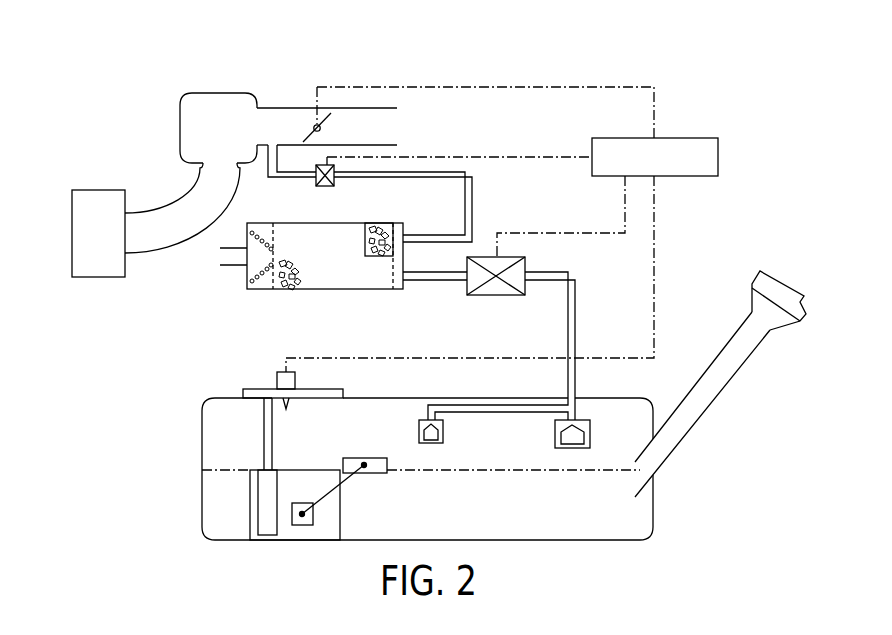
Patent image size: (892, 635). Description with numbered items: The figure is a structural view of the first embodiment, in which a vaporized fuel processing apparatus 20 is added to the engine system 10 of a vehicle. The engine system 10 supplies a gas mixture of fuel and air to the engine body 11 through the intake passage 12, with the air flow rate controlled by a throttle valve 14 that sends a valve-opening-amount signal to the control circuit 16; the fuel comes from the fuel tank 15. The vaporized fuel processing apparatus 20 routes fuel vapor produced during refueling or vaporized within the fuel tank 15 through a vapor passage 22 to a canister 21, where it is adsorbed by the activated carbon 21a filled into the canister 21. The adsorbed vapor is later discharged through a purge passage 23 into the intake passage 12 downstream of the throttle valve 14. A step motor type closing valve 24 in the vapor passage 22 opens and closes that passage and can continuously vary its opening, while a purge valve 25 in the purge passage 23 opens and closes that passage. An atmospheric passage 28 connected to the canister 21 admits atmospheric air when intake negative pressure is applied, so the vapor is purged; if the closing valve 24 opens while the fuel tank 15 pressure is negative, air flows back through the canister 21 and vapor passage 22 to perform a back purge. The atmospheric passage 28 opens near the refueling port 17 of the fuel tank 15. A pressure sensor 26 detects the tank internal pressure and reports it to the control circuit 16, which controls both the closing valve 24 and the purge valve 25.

The engine system 10 is at (100, 78).
The engine body 11 is at (95, 203).
The intake passage 12 is at (270, 107).
The throttle valve 14 is at (327, 107).
The fuel tank 15 is at (198, 440).
The control circuit 16 is at (705, 137).
The refueling port 17 is at (801, 316).
The vaporized fuel processing apparatus 20 is at (508, 78).
The canister 21 is at (328, 294).
The activated carbon 21a is at (393, 224).
The vapor passage 22 is at (581, 306).
The purge passage 23 is at (473, 193).
The closing valve 24 is at (492, 298).
The purge valve 25 is at (316, 185).
The pressure sensor 26 is at (277, 382).
The atmospheric passage 28 is at (233, 266).